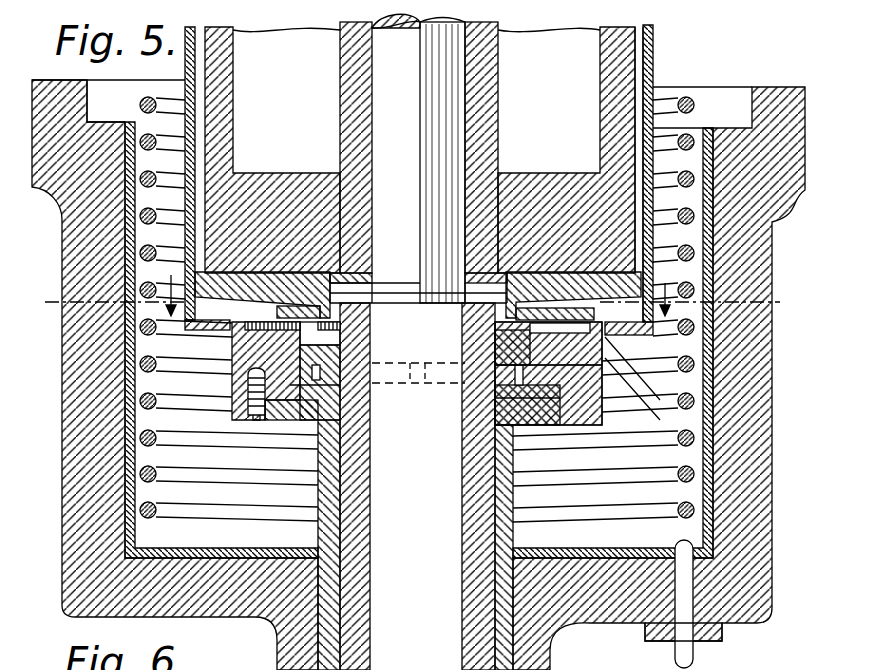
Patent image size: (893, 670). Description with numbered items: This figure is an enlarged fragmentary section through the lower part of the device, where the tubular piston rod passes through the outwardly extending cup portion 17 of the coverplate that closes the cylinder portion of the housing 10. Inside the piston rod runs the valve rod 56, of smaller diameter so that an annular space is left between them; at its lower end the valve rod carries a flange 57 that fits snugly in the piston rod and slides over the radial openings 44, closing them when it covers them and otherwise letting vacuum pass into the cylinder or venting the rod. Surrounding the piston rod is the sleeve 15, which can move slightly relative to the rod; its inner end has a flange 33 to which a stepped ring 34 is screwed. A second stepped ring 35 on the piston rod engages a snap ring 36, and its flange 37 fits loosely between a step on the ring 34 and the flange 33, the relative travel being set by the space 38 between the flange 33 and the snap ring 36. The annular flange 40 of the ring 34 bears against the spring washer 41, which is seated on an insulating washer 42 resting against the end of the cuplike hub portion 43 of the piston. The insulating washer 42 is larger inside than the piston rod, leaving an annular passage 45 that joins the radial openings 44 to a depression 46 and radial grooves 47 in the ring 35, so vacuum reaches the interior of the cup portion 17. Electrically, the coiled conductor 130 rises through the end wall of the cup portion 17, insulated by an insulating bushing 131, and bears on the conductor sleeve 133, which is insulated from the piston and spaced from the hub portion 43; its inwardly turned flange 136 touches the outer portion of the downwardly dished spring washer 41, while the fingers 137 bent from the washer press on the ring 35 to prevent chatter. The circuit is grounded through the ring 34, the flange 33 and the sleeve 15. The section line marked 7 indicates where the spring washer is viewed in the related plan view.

The housing 10 is at (483, 97).
The valve rod 56 is at (440, 130).
The cuplike hub portion 43 is at (622, 55).
The conductor sleeve 133 is at (648, 77).
The radial openings 44 is at (365, 272).
The annular passage 45 is at (528, 273).
The fingers 137 is at (548, 283).
The radial grooves 47 is at (335, 338).
The flange 57 is at (322, 371).
The flange 37 is at (332, 402).
The snap ring 36 is at (500, 388).
The space 38 is at (492, 405).
The stepped ring 34 is at (500, 428).
The flange 33 is at (548, 458).
The depression 46 is at (505, 330).
The second stepped ring 35 is at (525, 352).
The spring washer 41 is at (655, 330).
The insulating washer 42 is at (650, 280).
The inwardly turned flange 136 is at (706, 375).
The annular flange 40 is at (700, 415).
The cup portion 17 is at (768, 447).
The coiled conductor 130 is at (690, 478).
The insulating bushing 131 is at (722, 635).
The sleeve 15 is at (500, 660).
The section line 7 is at (418, 296).